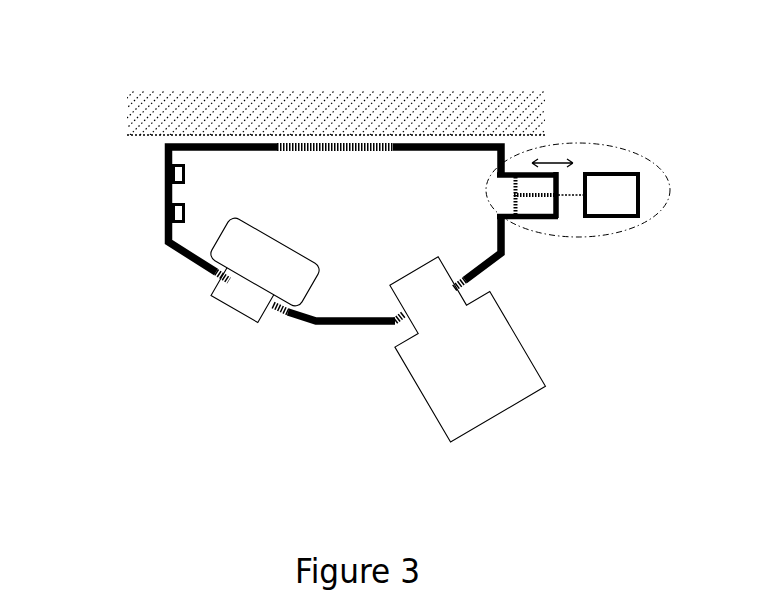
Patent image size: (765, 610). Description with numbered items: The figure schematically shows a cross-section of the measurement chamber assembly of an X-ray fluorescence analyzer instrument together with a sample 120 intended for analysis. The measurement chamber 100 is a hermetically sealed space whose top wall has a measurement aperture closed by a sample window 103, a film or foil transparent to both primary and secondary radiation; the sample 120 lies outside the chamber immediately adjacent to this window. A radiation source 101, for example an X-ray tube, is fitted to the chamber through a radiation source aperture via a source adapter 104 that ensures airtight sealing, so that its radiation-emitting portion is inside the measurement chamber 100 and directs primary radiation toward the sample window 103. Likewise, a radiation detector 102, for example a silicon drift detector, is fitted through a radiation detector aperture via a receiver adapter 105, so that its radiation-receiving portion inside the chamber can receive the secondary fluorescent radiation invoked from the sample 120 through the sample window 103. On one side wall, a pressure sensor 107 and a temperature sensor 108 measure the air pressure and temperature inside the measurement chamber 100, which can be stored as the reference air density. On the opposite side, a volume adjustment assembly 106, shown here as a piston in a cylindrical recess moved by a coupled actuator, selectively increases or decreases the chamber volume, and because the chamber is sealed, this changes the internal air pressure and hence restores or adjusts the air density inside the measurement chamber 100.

The measurement chamber 100 is at (410, 206).
The radiation source 101 is at (427, 382).
The radiation detector 102 is at (250, 310).
The sample window 103 is at (322, 150).
The source adapter 104 is at (463, 283).
The receiver adapter 105 is at (213, 278).
The volume adjustment assembly 106 is at (608, 233).
The pressure sensor 107 is at (168, 181).
The temperature sensor 108 is at (168, 221).
The sample 120 is at (238, 108).